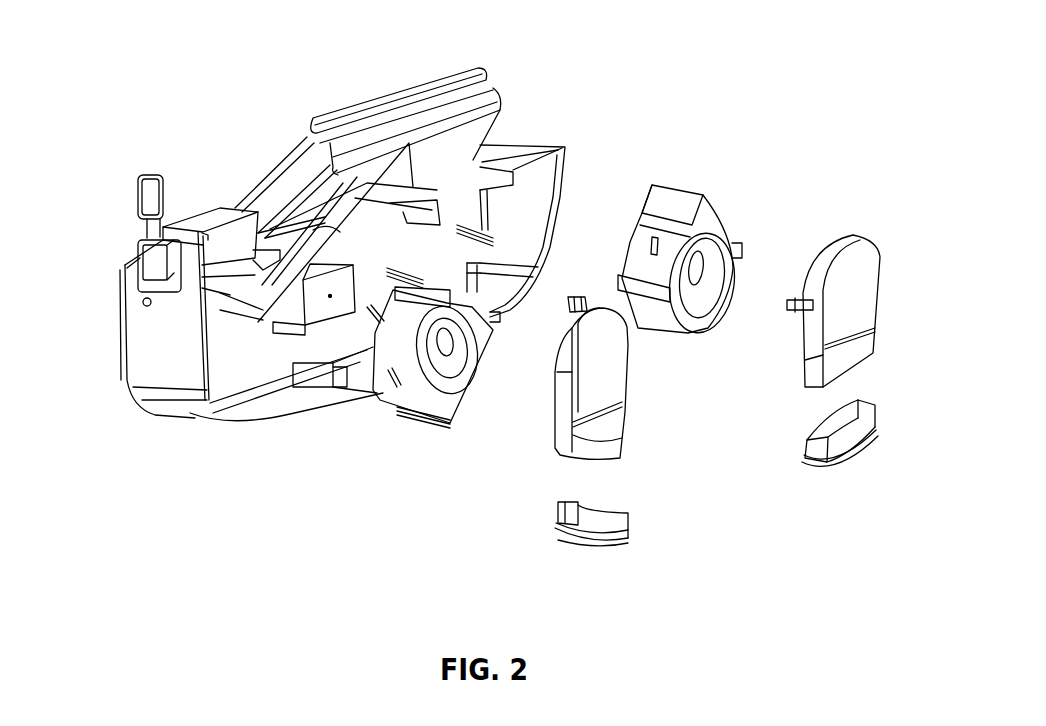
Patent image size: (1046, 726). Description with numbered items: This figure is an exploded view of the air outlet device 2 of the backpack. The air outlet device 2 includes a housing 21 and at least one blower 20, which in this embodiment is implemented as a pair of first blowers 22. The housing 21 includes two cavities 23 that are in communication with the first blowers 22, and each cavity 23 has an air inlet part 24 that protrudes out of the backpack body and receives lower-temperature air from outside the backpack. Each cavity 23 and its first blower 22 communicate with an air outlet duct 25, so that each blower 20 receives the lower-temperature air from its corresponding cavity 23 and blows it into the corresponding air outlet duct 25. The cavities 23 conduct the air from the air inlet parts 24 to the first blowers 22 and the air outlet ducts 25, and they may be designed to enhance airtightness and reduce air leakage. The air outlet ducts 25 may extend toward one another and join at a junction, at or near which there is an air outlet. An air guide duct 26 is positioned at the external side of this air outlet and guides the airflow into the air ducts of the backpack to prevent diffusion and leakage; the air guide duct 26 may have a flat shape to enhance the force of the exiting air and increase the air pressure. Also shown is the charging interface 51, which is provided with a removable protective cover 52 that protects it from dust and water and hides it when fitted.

The air outlet device 2 is at (733, 45).
The blower 20 is at (867, 133).
The housing 21 is at (265, 362).
The first blower 22 is at (410, 375).
The cavity 23 is at (600, 392).
The air inlet part 24 is at (625, 540).
The air outlet duct 25 is at (295, 245).
The air guide duct 26 is at (407, 97).
The charging interface 51 is at (160, 267).
The protective cover 52 is at (147, 202).